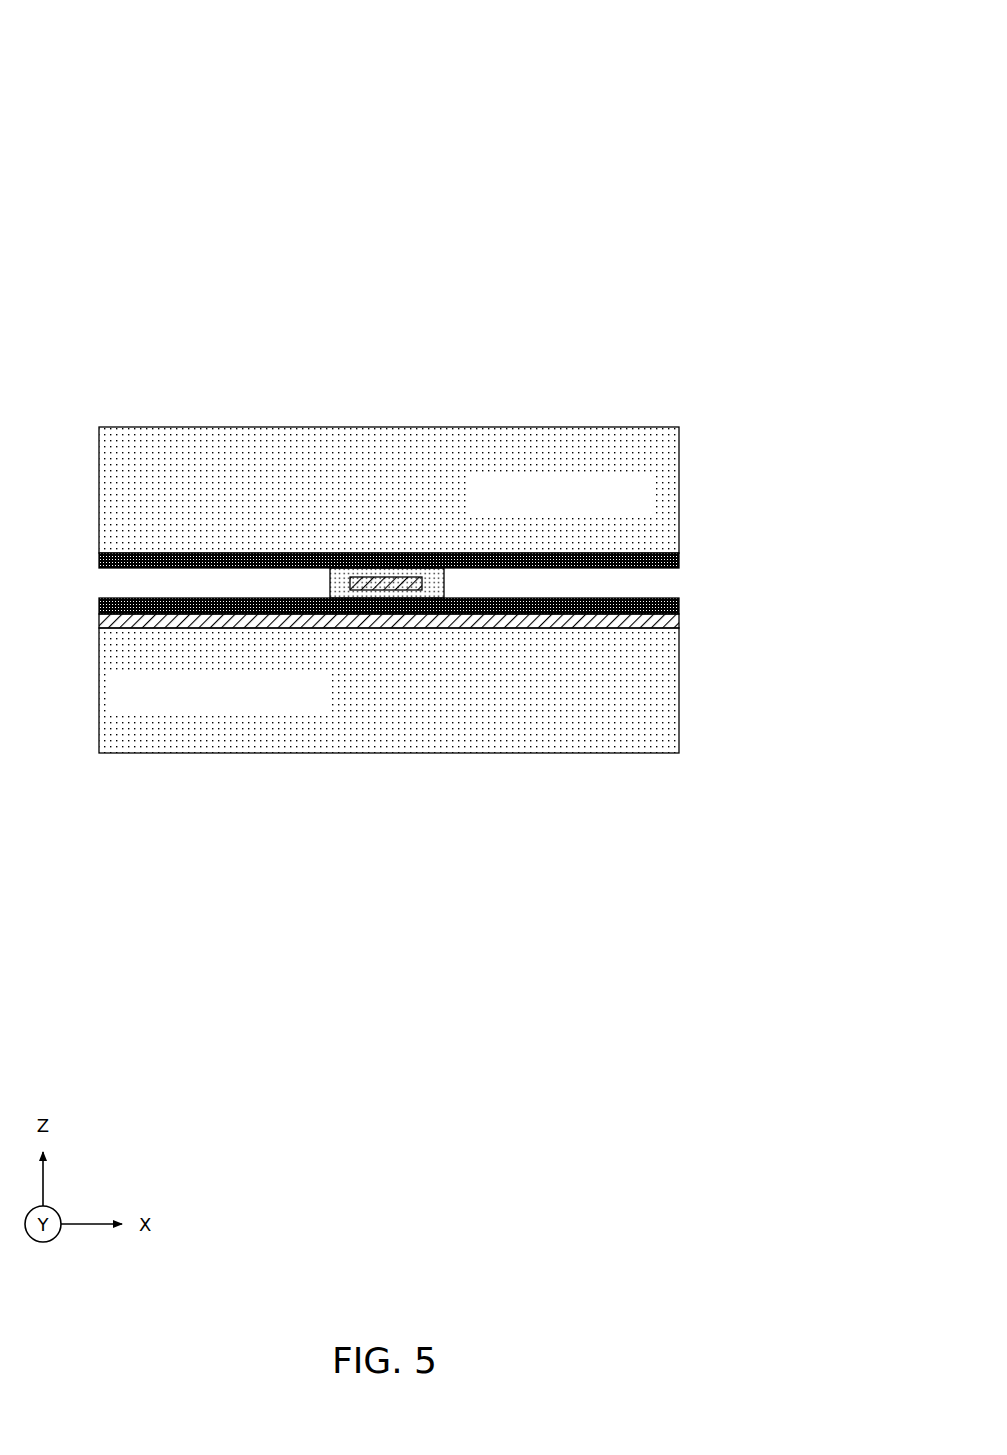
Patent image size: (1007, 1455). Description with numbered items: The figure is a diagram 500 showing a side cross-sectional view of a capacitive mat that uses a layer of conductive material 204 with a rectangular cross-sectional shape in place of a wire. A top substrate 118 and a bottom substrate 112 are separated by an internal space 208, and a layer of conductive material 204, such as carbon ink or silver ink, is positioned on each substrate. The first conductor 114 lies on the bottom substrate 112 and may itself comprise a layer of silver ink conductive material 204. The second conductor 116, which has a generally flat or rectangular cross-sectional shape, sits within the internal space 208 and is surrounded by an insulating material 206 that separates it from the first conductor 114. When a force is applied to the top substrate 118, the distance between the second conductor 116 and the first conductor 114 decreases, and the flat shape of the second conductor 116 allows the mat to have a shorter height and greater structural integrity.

The diagram 500 is at (486, 444).
The top substrate 118 is at (648, 500).
The bottom substrate 112 is at (320, 702).
The conductive material 204 is at (679, 563).
The insulating material 206 is at (395, 570).
The internal space 208 is at (538, 592).
The first conductor 114 is at (600, 628).
The second conductor 116 is at (392, 589).